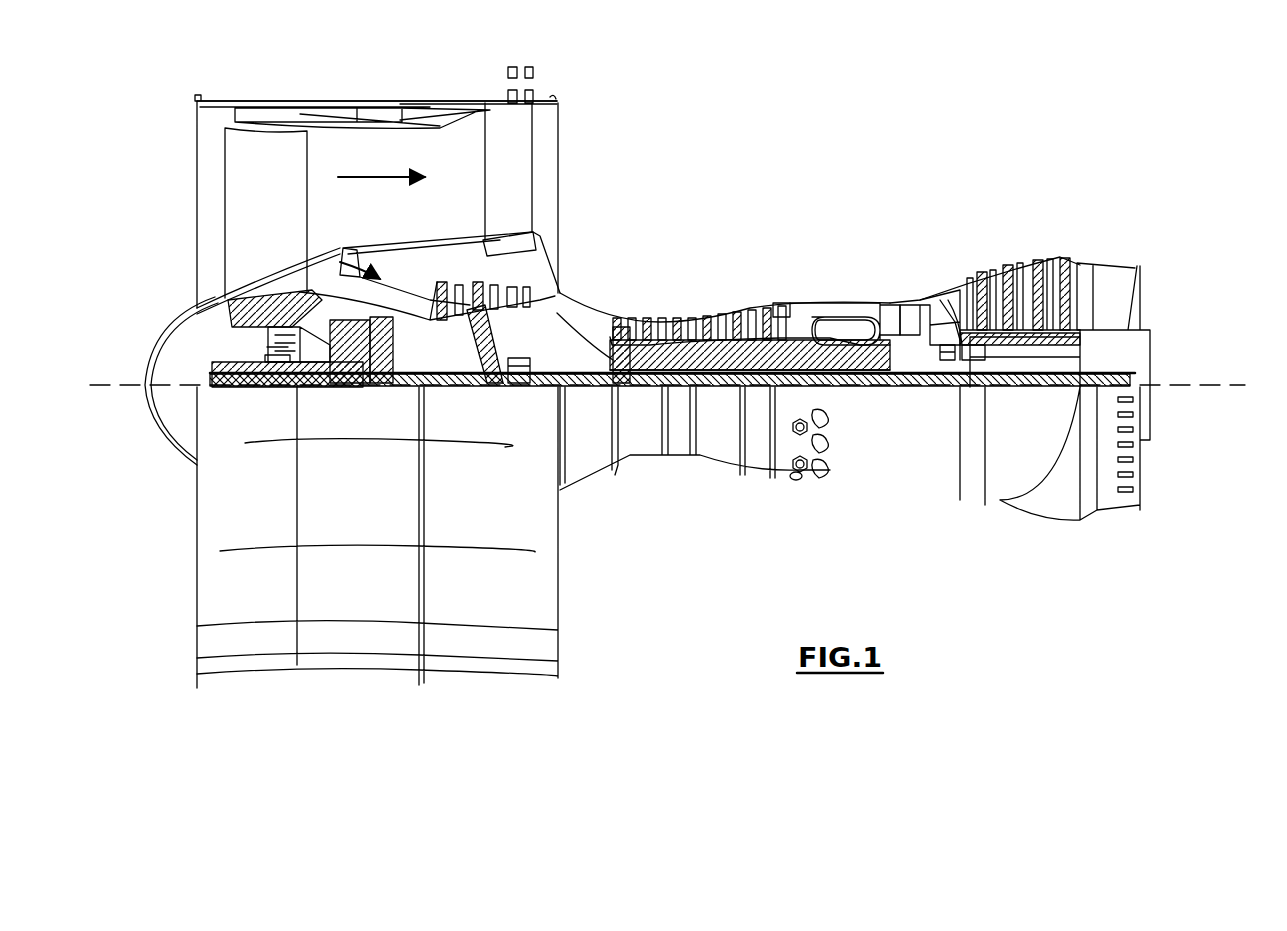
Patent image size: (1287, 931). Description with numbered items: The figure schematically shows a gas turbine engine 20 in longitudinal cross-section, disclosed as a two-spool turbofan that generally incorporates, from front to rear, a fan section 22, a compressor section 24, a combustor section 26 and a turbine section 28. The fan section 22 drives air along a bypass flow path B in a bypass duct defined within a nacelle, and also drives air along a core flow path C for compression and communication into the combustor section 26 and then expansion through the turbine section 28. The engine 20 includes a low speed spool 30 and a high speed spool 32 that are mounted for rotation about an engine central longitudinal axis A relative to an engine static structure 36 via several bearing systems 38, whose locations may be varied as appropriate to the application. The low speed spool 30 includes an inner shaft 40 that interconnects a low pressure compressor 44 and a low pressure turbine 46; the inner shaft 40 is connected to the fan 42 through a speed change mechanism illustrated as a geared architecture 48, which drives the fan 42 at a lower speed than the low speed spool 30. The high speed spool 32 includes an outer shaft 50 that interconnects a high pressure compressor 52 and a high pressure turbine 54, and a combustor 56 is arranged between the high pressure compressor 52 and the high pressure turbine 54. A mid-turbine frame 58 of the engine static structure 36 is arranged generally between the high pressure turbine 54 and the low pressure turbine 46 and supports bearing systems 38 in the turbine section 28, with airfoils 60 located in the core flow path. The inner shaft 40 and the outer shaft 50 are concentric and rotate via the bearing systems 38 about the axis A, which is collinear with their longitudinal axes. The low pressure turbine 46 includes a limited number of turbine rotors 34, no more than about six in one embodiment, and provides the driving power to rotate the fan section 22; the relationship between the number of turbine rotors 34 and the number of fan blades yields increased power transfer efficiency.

The gas turbine engine 20 is at (838, 148).
The fan section 22 is at (405, 80).
The compressor section 24 is at (825, 222).
The combustor section 26 is at (925, 222).
The turbine section 28 is at (1095, 222).
The low speed spool 30 is at (712, 395).
The high speed spool 32 is at (760, 352).
The turbine rotors 34 is at (1043, 345).
The engine static structure 36 is at (757, 480).
The bearing systems 38 is at (270, 387).
The inner shaft 40 is at (580, 390).
The fan 42 is at (281, 229).
The low pressure compressor 44 is at (497, 282).
The low pressure turbine 46 is at (1030, 290).
The geared architecture 48 is at (385, 368).
The outer shaft 50 is at (835, 370).
The high pressure compressor 52 is at (693, 352).
The high pressure turbine 54 is at (905, 305).
The combustor 56 is at (835, 330).
The mid-turbine frame 58 is at (945, 296).
The airfoils 60 is at (985, 345).
The engine central longitudinal axis A is at (1210, 385).
The bypass flow path B is at (380, 170).
The core flow path C is at (360, 272).